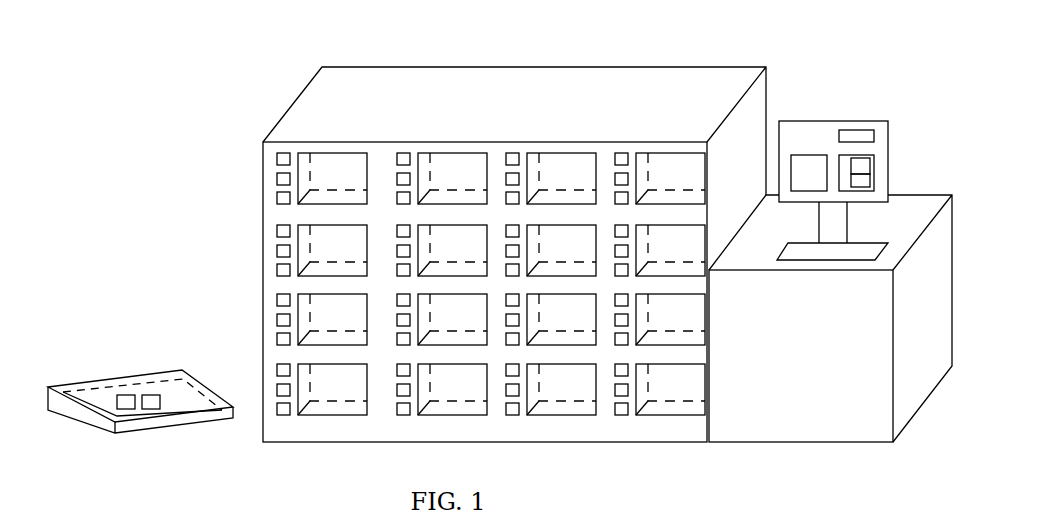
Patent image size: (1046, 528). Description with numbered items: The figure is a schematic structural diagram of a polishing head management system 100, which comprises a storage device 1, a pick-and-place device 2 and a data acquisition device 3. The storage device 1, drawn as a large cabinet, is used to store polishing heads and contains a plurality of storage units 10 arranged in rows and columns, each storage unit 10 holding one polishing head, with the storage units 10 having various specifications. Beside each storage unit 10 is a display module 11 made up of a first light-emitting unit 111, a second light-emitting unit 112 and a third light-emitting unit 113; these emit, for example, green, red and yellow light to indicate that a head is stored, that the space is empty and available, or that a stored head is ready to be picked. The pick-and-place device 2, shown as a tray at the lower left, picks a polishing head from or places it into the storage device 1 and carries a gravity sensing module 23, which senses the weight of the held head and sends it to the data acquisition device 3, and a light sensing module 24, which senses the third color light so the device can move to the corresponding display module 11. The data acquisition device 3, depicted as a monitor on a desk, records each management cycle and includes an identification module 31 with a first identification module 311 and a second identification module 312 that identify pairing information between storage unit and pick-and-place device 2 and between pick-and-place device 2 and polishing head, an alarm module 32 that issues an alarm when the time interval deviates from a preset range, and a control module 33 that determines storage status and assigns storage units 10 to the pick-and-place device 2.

The polishing head management system 100 is at (528, 19).
The storage device 1 is at (407, 82).
The storage unit 10 is at (323, 162).
The display module 11 is at (223, 152).
The first light-emitting unit 111 is at (284, 158).
The second light-emitting unit 112 is at (284, 178).
The third light-emitting unit 113 is at (284, 196).
The pick-and-place device 2 is at (72, 405).
The gravity sensing module 23 is at (127, 397).
The light sensing module 24 is at (152, 397).
The data acquisition device 3 is at (798, 141).
The identification module 31 is at (925, 143).
The first identification module 311 is at (862, 167).
The second identification module 312 is at (862, 179).
The alarm module 32 is at (862, 133).
The control module 33 is at (815, 175).